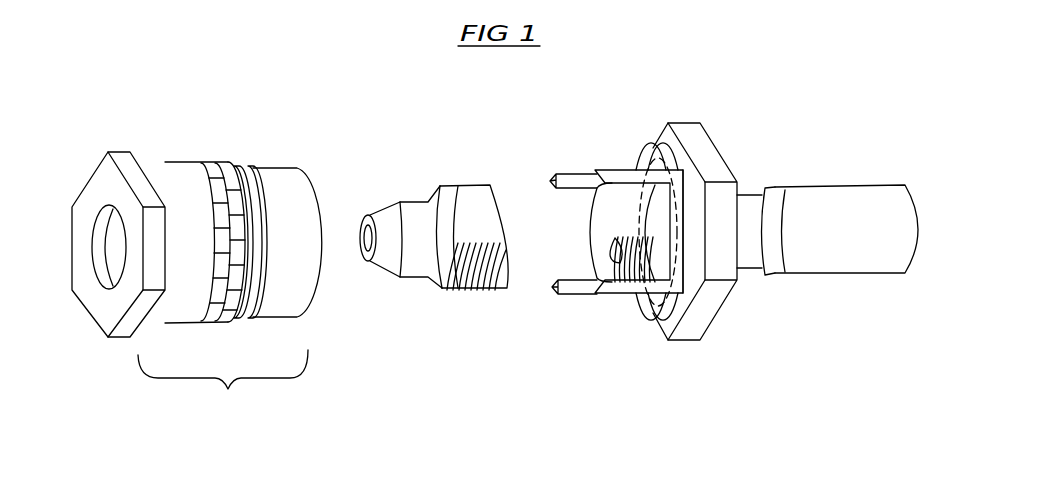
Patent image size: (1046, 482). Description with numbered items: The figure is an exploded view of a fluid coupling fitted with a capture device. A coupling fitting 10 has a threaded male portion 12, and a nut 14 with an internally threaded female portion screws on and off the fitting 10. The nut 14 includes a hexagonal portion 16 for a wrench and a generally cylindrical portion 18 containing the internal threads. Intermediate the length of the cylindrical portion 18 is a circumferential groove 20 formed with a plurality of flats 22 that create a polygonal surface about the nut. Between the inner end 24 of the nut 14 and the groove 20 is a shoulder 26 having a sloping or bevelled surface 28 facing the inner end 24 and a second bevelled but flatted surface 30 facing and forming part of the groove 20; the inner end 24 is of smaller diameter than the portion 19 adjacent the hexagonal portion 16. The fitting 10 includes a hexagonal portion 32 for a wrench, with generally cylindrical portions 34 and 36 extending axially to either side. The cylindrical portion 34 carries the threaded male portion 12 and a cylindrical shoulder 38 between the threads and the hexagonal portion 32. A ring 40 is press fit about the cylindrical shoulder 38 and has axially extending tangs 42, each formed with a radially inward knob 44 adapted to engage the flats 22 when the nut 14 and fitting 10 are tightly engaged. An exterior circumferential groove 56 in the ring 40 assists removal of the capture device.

The coupling fitting 10 is at (813, 192).
The threaded male portion 12 is at (467, 203).
The nut 14 is at (105, 177).
The hexagonal portion 16 is at (125, 162).
The cylindrical portion 18 is at (223, 385).
The portion adjacent the hexagonal portion 19 is at (163, 170).
The circumferential groove 20 is at (208, 312).
The flats 22 is at (246, 182).
The inner end 24 is at (302, 260).
The shoulder 26 is at (252, 172).
The bevelled surface 28 is at (262, 200).
The bevelled flatted surface 30 is at (243, 230).
The hexagonal portion 32 is at (718, 178).
The cylindrical portion 34 is at (475, 230).
The cylindrical portion 36 is at (850, 225).
The cylindrical shoulder 38 is at (715, 176).
The ring 40 is at (680, 287).
The tangs 42 is at (613, 293).
The knob 44 is at (553, 291).
The exterior circumferential groove 56 is at (665, 203).